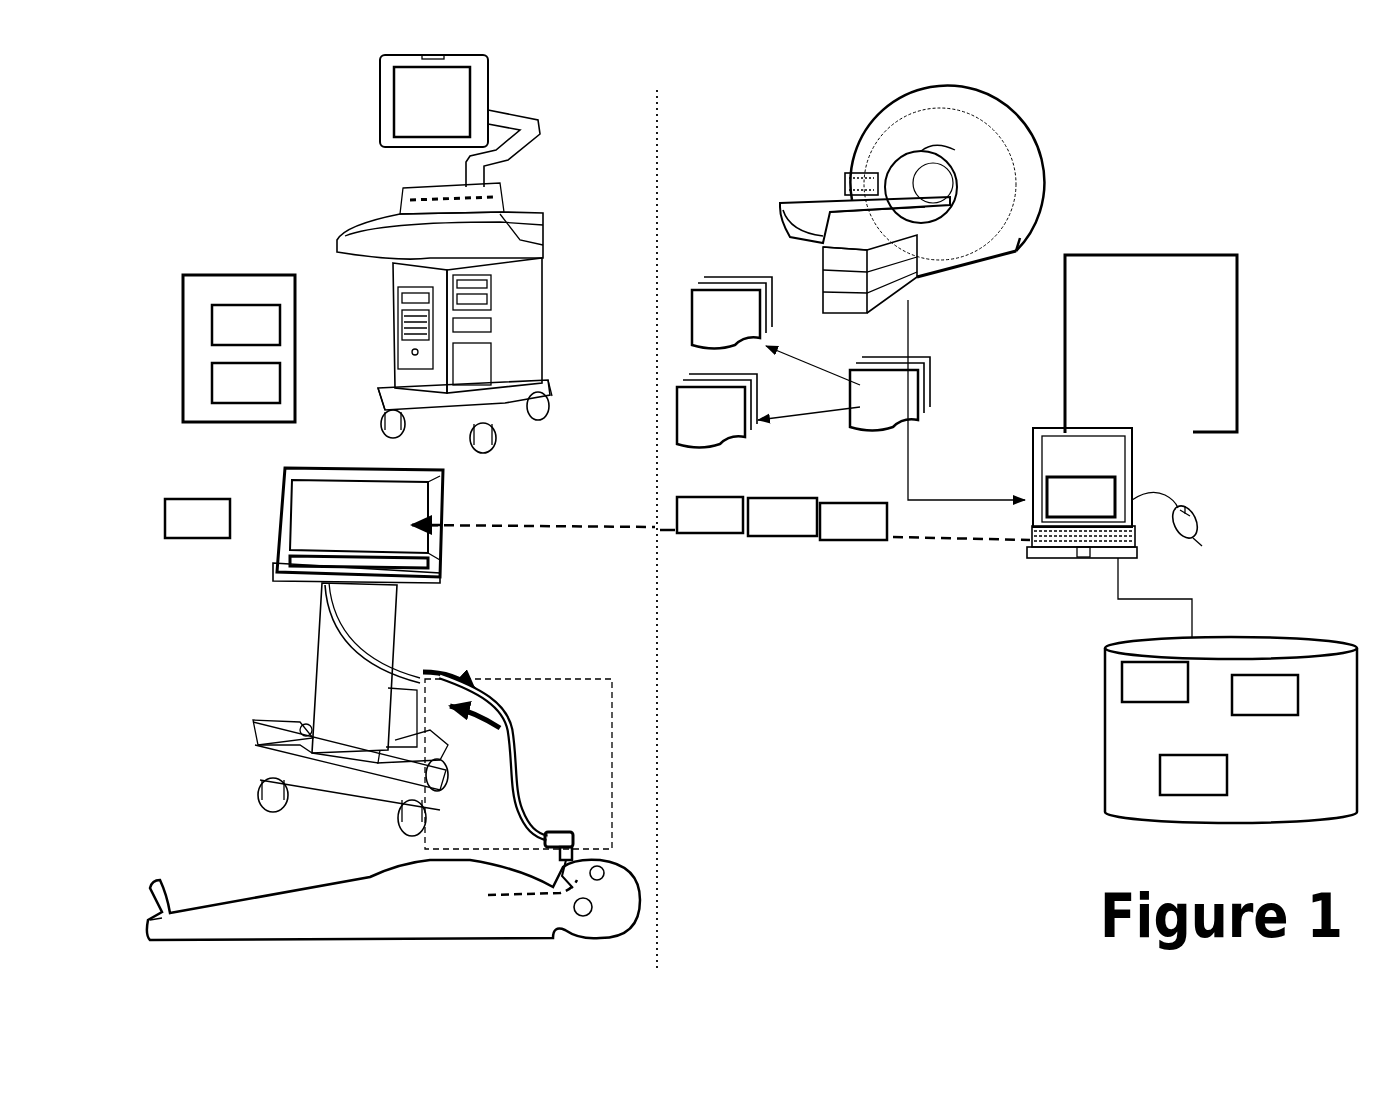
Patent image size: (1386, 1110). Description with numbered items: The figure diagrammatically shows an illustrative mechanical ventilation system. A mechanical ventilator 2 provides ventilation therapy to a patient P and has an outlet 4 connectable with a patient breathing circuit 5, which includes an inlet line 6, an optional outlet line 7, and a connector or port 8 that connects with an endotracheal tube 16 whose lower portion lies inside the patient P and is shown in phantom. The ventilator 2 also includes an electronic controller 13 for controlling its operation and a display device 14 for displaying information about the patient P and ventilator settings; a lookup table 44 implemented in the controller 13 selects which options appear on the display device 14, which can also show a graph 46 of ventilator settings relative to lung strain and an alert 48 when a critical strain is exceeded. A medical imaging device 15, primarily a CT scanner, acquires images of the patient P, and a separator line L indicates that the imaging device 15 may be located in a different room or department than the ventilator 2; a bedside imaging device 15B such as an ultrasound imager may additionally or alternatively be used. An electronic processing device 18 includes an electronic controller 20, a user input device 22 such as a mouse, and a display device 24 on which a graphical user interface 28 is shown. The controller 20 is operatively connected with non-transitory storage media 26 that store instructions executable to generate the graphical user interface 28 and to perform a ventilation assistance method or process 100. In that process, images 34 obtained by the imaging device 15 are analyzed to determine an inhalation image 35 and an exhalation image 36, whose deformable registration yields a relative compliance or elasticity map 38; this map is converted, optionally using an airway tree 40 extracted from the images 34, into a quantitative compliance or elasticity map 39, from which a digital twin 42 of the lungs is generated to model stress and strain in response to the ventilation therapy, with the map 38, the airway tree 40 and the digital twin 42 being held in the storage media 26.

The mechanical ventilator 2 is at (319, 652).
The outlet 4 is at (398, 591).
The patient breathing circuit 5 is at (563, 680).
The inlet line 6 is at (500, 750).
The outlet line 7 is at (500, 750).
The connector or port 8 is at (557, 832).
The electronic controller 13 is at (326, 575).
The display device 14 is at (369, 525).
The medical imaging device 15 is at (826, 137).
The bedside imaging device 15B is at (330, 176).
The endotracheal tube 16 is at (526, 906).
The electronic processing device 18 is at (1064, 459).
The electronic controller 20 is at (1037, 525).
The user input device 22 is at (1189, 530).
The display device 24 is at (1097, 474).
The non-transitory storage media 26 is at (1247, 627).
The graphical user interface 28 is at (1098, 512).
The images 34 is at (901, 415).
The inhalation image 35 is at (741, 332).
The exhalation image 36 is at (728, 430).
The relative compliance or elasticity map 38 is at (870, 535).
The quantitative compliance or elasticity map 39 is at (799, 531).
The airway tree 40 is at (1282, 709).
The digital twin 42 is at (727, 529).
The lookup table 44 is at (273, 613).
The graph 46 is at (263, 397).
The alert 48 is at (271, 469).
The ventilation assistance method or process 100 is at (1125, 407).
The patient P is at (387, 878).
The separator line L is at (654, 158).